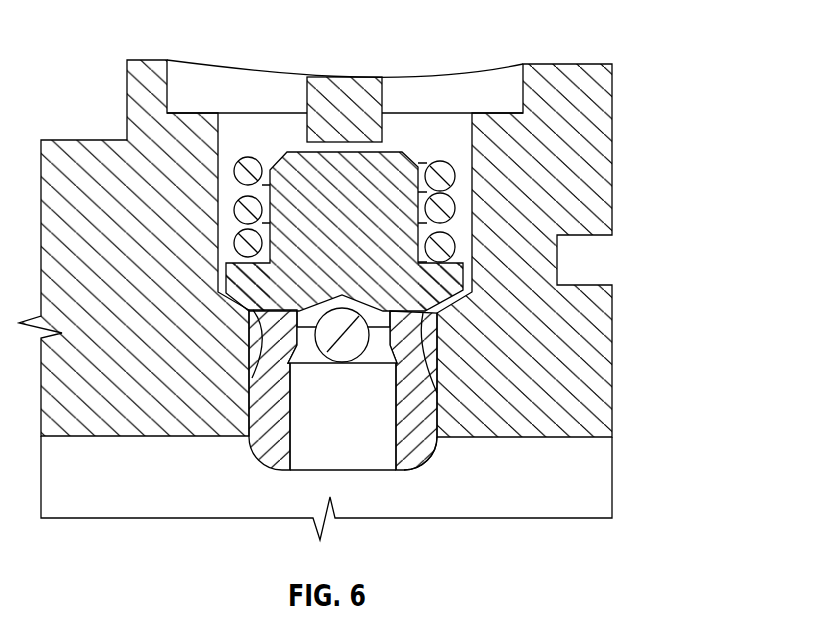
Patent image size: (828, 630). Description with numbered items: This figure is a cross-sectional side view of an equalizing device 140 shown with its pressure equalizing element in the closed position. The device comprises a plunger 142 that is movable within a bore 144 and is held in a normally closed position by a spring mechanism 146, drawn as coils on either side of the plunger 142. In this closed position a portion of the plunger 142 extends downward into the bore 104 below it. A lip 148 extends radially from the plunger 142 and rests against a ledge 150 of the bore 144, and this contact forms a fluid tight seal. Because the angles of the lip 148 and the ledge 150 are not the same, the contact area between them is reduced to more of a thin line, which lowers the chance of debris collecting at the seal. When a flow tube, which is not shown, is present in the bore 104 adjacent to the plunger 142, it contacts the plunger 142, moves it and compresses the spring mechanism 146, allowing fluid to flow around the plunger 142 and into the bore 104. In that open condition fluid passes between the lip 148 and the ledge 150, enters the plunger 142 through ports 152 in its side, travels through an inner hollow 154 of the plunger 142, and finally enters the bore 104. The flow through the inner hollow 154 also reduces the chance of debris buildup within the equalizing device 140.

The equalizing device 140 is at (646, 31).
The bore 144 is at (448, 127).
The spring mechanism 146 is at (445, 205).
The plunger 142 is at (392, 250).
The lip 148 is at (438, 275).
The ledge 150 is at (400, 347).
The ports 152 is at (363, 435).
The inner hollow 154 is at (433, 442).
The bore 104 is at (485, 492).